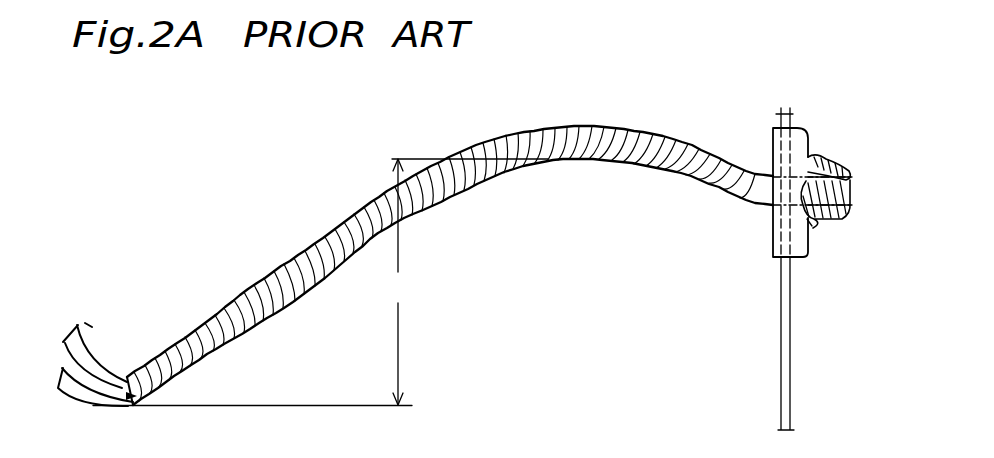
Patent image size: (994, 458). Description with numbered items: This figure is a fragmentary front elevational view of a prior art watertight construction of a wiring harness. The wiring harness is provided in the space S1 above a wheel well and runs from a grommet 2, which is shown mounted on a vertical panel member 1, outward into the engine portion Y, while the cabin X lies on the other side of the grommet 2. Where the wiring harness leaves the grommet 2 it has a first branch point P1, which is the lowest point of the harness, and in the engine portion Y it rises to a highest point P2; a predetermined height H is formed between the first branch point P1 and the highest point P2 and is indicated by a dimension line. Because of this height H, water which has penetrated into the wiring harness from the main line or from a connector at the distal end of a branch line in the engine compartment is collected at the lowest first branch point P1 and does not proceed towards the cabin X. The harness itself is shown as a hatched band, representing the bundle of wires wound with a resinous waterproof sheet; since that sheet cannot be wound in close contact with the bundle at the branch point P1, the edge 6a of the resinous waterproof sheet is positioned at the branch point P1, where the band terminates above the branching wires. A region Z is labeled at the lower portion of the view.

The rod / anchor pin 1 is at (788, 400).
The grommet 2 is at (772, 255).
The edge of the resinous waterproof sheet 6a is at (132, 406).
The first branch point P1 is at (124, 378).
The highest point P2 is at (549, 127).
The space S1 is at (327, 193).
The predetermined height H is at (467, 282).
The cabin X is at (868, 337).
The engine portion Y is at (610, 337).
The region Z is at (523, 453).